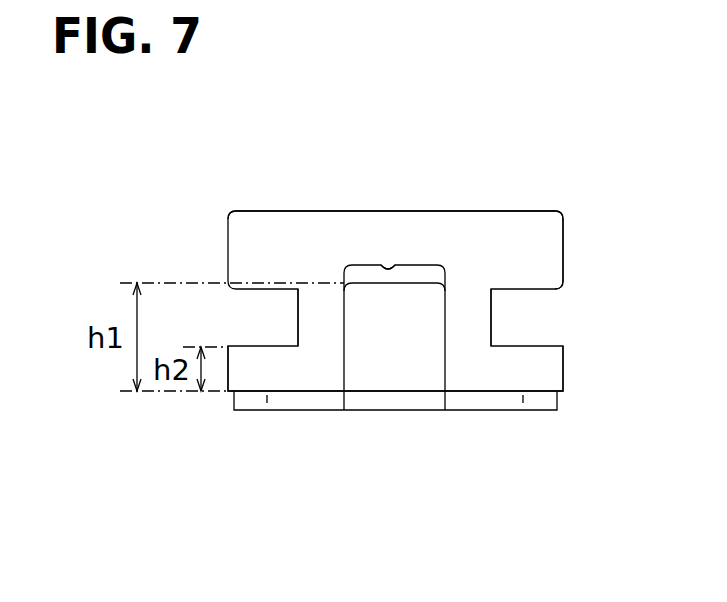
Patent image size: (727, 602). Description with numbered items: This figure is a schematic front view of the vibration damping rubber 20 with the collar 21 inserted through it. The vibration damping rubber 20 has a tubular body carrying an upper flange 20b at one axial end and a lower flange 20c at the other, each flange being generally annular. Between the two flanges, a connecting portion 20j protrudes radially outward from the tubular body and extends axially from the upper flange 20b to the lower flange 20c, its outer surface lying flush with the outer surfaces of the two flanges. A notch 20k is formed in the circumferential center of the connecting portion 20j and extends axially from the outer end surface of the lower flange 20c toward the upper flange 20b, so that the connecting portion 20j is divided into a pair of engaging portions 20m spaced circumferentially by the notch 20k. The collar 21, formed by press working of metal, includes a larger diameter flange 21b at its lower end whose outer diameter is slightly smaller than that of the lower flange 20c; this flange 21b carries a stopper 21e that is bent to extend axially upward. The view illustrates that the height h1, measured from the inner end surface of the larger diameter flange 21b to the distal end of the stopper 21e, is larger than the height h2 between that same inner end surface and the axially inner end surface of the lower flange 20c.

The vibration damping rubber 20 is at (265, 211).
The upper flange 20b is at (556, 243).
The lower flange 20c is at (556, 357).
The engaging portions 20m is at (312, 318).
The notch 20k is at (393, 268).
The connecting portion 20j is at (465, 338).
The collar 21 is at (280, 411).
The stopper 21e is at (373, 388).
The larger diameter flange 21b is at (540, 412).